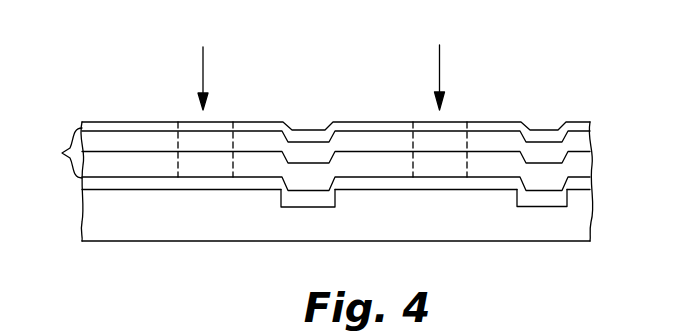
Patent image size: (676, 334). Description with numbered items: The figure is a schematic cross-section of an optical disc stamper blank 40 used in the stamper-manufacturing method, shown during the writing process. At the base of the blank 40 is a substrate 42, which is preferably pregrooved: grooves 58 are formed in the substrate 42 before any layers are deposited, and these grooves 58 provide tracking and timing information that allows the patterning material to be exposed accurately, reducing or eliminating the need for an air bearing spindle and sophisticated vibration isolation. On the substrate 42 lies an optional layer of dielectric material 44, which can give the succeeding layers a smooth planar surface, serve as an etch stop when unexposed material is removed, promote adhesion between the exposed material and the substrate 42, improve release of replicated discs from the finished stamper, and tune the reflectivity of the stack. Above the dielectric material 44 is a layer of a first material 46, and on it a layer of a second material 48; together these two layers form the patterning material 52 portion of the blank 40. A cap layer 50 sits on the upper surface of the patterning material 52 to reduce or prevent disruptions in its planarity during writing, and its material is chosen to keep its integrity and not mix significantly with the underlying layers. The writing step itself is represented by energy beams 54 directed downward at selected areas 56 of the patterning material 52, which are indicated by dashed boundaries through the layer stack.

The optical disc stamper blank 40 is at (531, 77).
The substrate 42 is at (580, 223).
The layer of dielectric material 44 is at (583, 183).
The layer of first material 46 is at (585, 162).
The layer of second material 48 is at (580, 138).
The cap layer 50 is at (582, 123).
The patterning material 52 is at (55, 153).
The energy beam 54 is at (202, 63).
The selected areas 56 is at (242, 122).
The grooves 58 is at (313, 207).